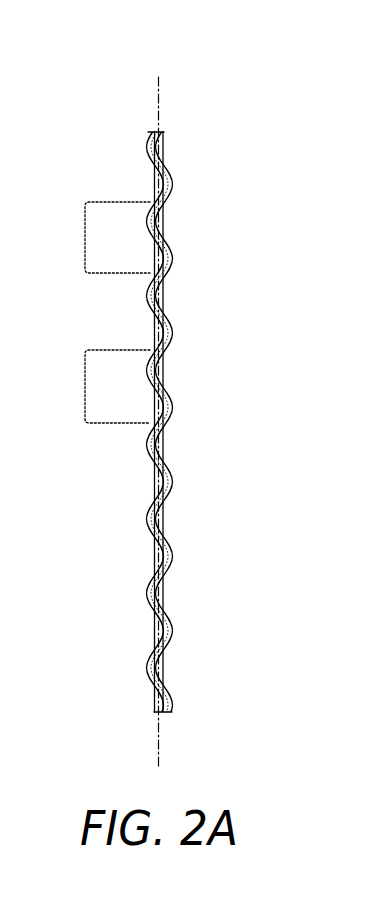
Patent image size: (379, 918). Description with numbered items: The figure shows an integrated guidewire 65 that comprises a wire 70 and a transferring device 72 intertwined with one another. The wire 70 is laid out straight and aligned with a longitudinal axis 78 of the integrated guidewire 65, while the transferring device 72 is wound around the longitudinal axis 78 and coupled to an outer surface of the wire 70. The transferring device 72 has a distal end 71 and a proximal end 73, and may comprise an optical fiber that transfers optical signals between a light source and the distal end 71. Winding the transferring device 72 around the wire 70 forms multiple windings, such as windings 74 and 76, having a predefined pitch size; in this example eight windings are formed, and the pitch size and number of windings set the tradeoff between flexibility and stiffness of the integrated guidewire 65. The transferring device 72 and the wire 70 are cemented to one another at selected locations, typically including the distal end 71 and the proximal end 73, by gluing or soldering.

The integrated guidewire 65 is at (212, 588).
The wire 70 is at (164, 143).
The distal end 71 is at (142, 119).
The transferring device 72 is at (171, 327).
The proximal end 73 is at (147, 699).
The winding 74 is at (85, 234).
The winding 76 is at (85, 382).
The longitudinal axis 78 is at (157, 742).